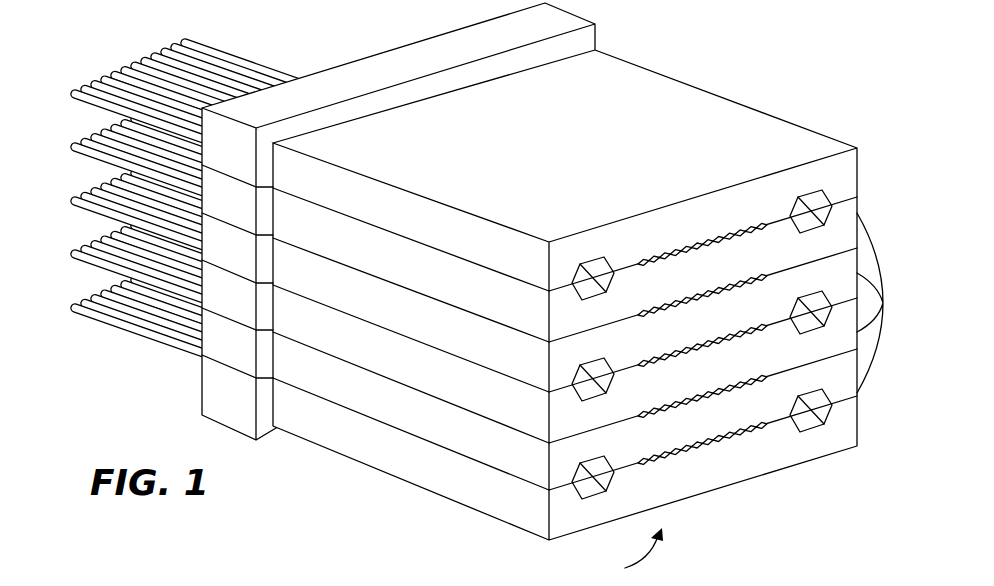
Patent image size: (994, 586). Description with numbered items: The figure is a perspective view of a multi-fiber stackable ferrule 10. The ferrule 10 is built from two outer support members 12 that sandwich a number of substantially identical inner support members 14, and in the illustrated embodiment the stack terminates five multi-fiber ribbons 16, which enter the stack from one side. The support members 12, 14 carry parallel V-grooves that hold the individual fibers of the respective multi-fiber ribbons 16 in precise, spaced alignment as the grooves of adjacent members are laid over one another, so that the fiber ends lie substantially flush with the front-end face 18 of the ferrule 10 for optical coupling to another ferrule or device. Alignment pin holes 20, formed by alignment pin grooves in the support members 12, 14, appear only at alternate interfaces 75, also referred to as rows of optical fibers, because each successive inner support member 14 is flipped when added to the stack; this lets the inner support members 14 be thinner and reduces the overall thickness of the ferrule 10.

The multi-fiber stackable ferrule 10 is at (747, 55).
The outer support member 12 is at (653, 84).
The inner support member 14 is at (732, 343).
The multi-fiber ribbon 16 is at (206, 56).
The front-end face 18 is at (630, 555).
The alignment pin hole 20 is at (598, 277).
The interface 75 is at (548, 305).